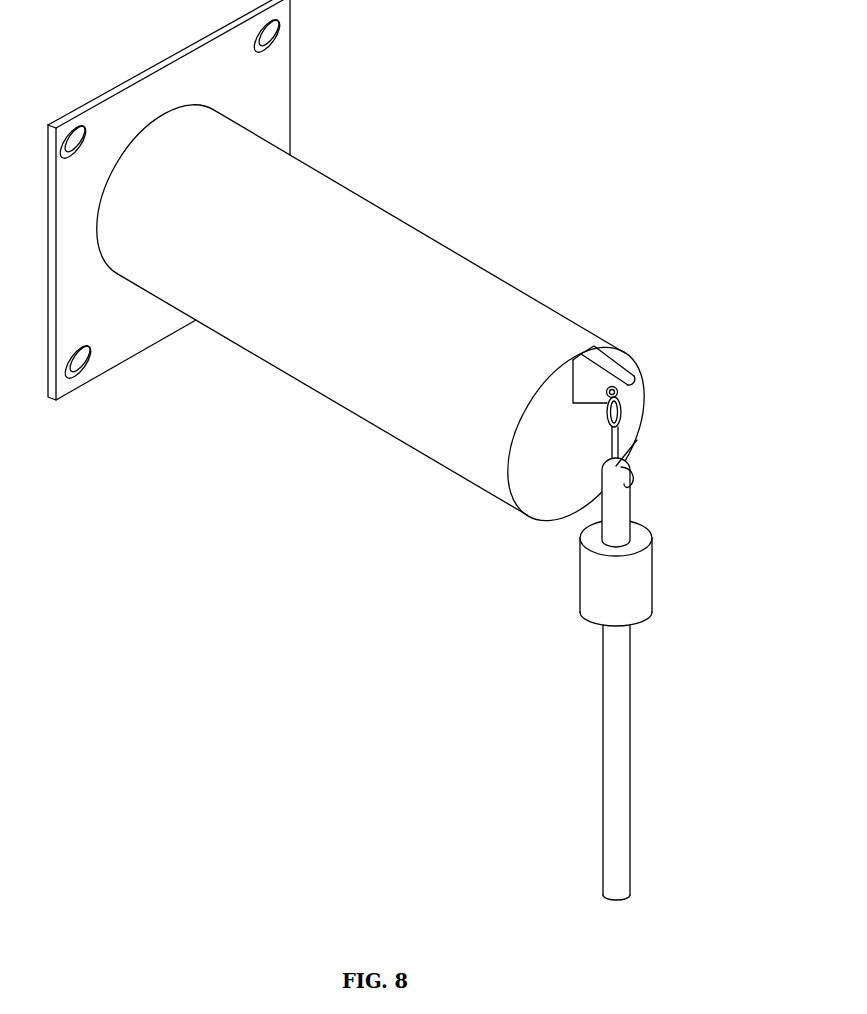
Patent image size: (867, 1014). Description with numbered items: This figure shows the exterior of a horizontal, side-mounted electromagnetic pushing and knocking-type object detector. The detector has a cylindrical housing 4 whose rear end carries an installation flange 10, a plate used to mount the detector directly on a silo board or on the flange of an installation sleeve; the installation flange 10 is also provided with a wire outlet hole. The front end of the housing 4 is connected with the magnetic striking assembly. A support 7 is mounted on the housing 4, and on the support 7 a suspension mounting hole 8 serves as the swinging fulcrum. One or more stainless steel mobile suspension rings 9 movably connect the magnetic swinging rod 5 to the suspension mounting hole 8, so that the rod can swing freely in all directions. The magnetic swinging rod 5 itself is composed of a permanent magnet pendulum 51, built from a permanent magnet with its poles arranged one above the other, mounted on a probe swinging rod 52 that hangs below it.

The installation flange 10 is at (280, 93).
The housing 4 is at (433, 255).
The support 7 is at (603, 341).
The suspension mounting hole 8 is at (643, 380).
The mobile suspension rings 9 is at (643, 423).
The magnetic swinging rod 5 is at (660, 497).
The permanent magnet pendulum 51 is at (655, 562).
The probe swinging rod 52 is at (625, 683).